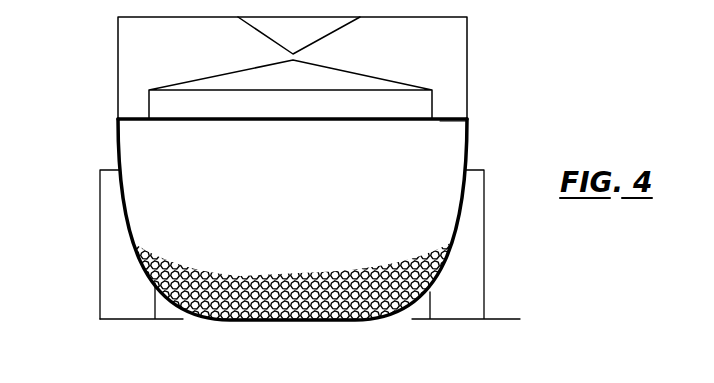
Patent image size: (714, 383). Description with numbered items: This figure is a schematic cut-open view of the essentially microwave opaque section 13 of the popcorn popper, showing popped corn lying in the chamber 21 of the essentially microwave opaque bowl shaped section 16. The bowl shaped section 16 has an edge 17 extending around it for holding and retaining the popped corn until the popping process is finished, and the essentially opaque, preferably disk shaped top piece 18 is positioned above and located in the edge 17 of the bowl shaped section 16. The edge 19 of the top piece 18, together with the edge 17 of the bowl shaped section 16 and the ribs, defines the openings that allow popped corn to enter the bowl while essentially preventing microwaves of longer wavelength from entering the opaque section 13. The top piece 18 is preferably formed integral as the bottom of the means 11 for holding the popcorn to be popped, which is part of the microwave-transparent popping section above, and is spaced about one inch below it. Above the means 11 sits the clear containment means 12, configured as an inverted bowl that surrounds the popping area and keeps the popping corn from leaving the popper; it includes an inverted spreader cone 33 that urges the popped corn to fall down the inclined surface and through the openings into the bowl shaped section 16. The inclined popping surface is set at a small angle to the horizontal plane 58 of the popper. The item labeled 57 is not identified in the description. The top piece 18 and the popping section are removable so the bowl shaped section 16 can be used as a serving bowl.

The means for holding the popcorn to be popped 11 is at (391, 61).
The containment means 12 is at (510, 73).
The essentially microwave opaque section 13 is at (89, 196).
The bowl shaped section 16 is at (463, 218).
The edge 17 is at (469, 118).
The top piece 18 is at (345, 123).
The edge of the top piece 19 is at (446, 124).
The chamber 21 is at (286, 203).
The inverted spreader cone 33 is at (276, 42).
The pedestal 57 is at (468, 280).
The horizontal plane 58 is at (183, 320).